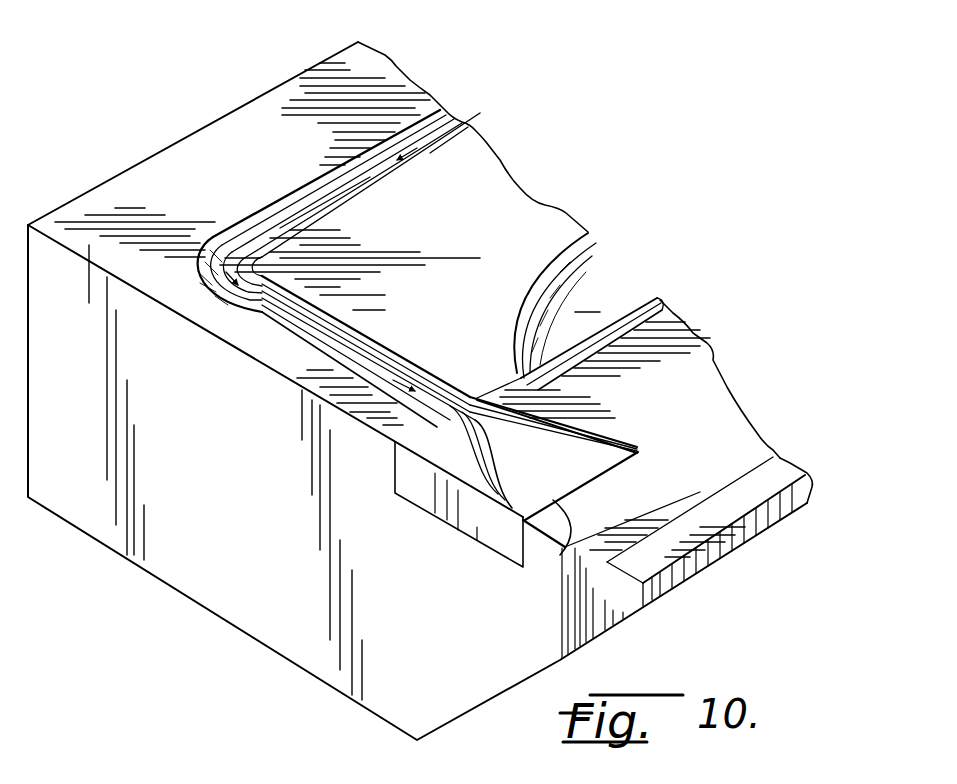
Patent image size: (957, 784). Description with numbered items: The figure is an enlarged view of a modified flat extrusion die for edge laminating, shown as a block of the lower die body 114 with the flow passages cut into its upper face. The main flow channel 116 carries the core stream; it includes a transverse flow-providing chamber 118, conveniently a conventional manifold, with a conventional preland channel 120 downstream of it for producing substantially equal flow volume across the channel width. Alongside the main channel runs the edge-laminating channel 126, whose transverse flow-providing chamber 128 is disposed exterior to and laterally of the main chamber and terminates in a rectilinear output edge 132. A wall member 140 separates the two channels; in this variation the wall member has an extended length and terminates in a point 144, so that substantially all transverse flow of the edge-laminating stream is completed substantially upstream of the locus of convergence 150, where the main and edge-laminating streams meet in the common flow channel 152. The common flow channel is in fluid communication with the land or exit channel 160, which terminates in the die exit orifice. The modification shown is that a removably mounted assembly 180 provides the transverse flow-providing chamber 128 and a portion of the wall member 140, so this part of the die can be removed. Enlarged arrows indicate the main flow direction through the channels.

The lower die body 114 is at (137, 168).
The main flow channel 116 is at (598, 262).
The transverse flow-providing chamber 118 is at (548, 312).
The preland channel 120 is at (650, 300).
The edge-laminating channel 126 is at (293, 223).
The transverse flow-providing chamber 128 is at (530, 480).
The output edge 132 is at (565, 540).
The wall member 140 is at (538, 410).
The point 144 is at (643, 453).
The locus of convergence 150 is at (647, 455).
The common flow channel 152 is at (720, 417).
The exit channel 160 is at (780, 480).
The removably mounted assembly 180 is at (436, 525).